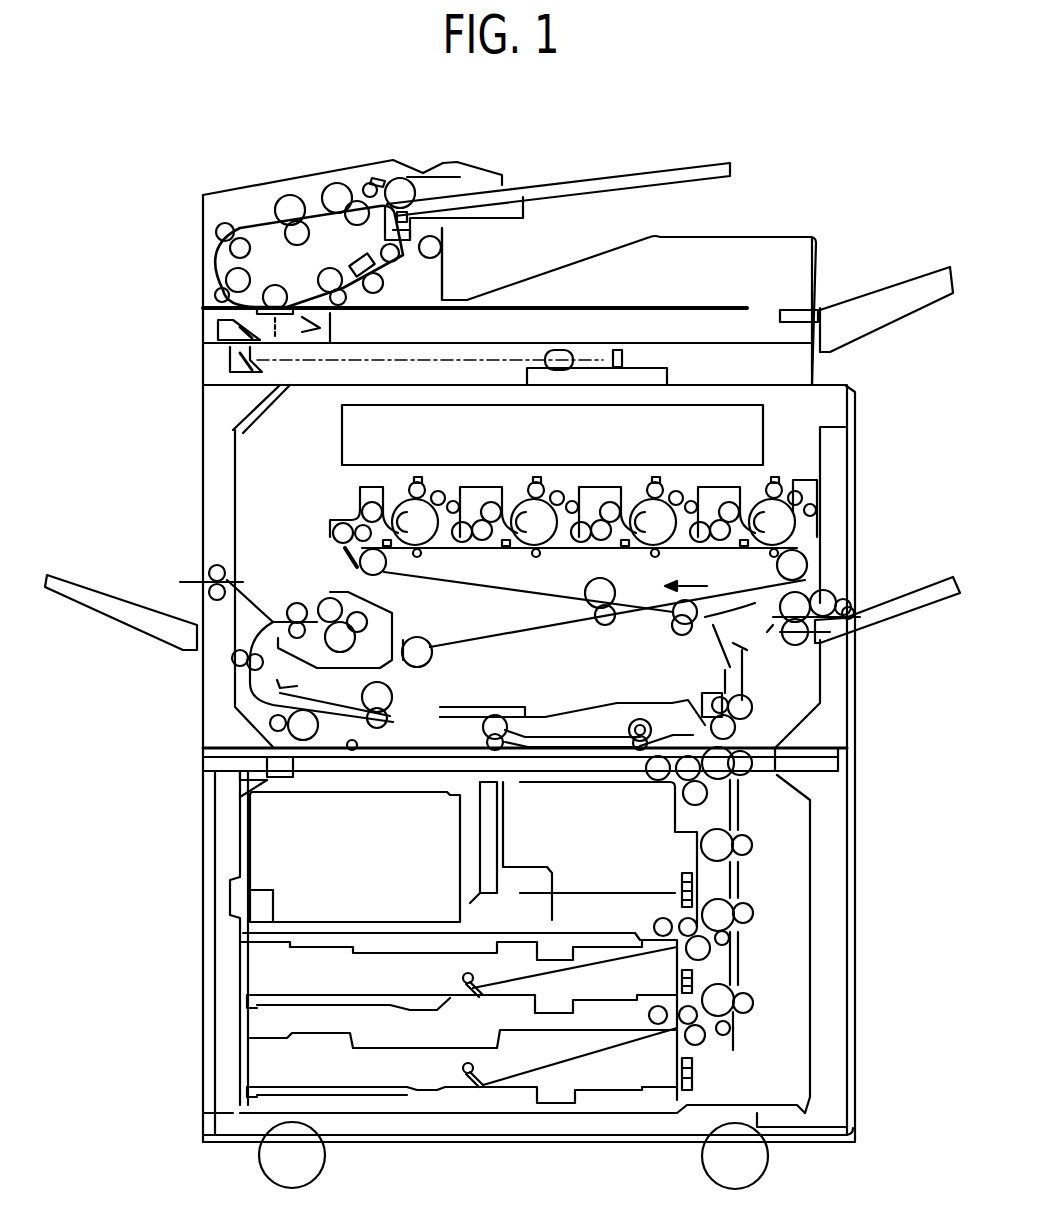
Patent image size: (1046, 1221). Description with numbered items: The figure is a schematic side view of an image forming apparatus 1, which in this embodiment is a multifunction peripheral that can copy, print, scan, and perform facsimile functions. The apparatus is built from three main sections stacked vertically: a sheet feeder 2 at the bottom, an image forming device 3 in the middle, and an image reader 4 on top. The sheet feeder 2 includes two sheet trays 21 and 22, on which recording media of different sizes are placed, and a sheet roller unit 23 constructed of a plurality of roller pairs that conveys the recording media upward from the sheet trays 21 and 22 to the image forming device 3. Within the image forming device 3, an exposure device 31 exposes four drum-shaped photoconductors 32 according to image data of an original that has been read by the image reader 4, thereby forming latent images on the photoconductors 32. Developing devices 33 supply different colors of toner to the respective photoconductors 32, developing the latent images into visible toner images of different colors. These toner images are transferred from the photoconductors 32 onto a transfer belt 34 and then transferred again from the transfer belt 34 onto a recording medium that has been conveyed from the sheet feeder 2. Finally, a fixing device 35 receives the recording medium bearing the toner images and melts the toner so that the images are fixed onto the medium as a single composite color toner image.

The image forming apparatus 1 is at (778, 120).
The sheet feeder 2 is at (193, 938).
The image forming device 3 is at (192, 662).
The image reader 4 is at (190, 236).
The sheet tray 21 is at (490, 1095).
The sheet tray 22 is at (390, 1005).
The sheet roller unit 23 is at (757, 890).
The exposure device 31 is at (350, 432).
The photoconductor 32 is at (420, 556).
The developing device 33 is at (462, 488).
The transfer belt 34 is at (458, 592).
The fixing device 35 is at (313, 586).